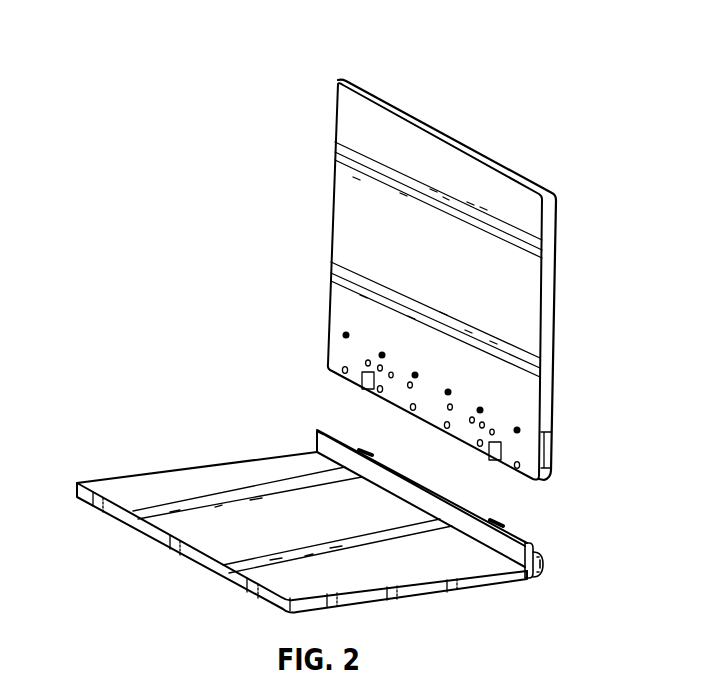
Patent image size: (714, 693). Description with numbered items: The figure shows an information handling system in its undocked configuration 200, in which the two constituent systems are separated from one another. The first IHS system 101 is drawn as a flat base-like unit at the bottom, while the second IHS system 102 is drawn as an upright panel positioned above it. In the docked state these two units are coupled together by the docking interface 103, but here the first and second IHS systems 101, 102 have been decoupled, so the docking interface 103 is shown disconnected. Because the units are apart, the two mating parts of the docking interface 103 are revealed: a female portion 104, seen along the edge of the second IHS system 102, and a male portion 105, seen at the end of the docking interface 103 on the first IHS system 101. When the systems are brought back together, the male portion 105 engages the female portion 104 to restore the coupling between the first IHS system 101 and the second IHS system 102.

The undocked configuration 200 is at (139, 58).
The first IHS system 101 is at (146, 484).
The second IHS system 102 is at (348, 178).
The docking interface 103 is at (551, 521).
The female portion 104 is at (545, 462).
The male portion 105 is at (543, 568).